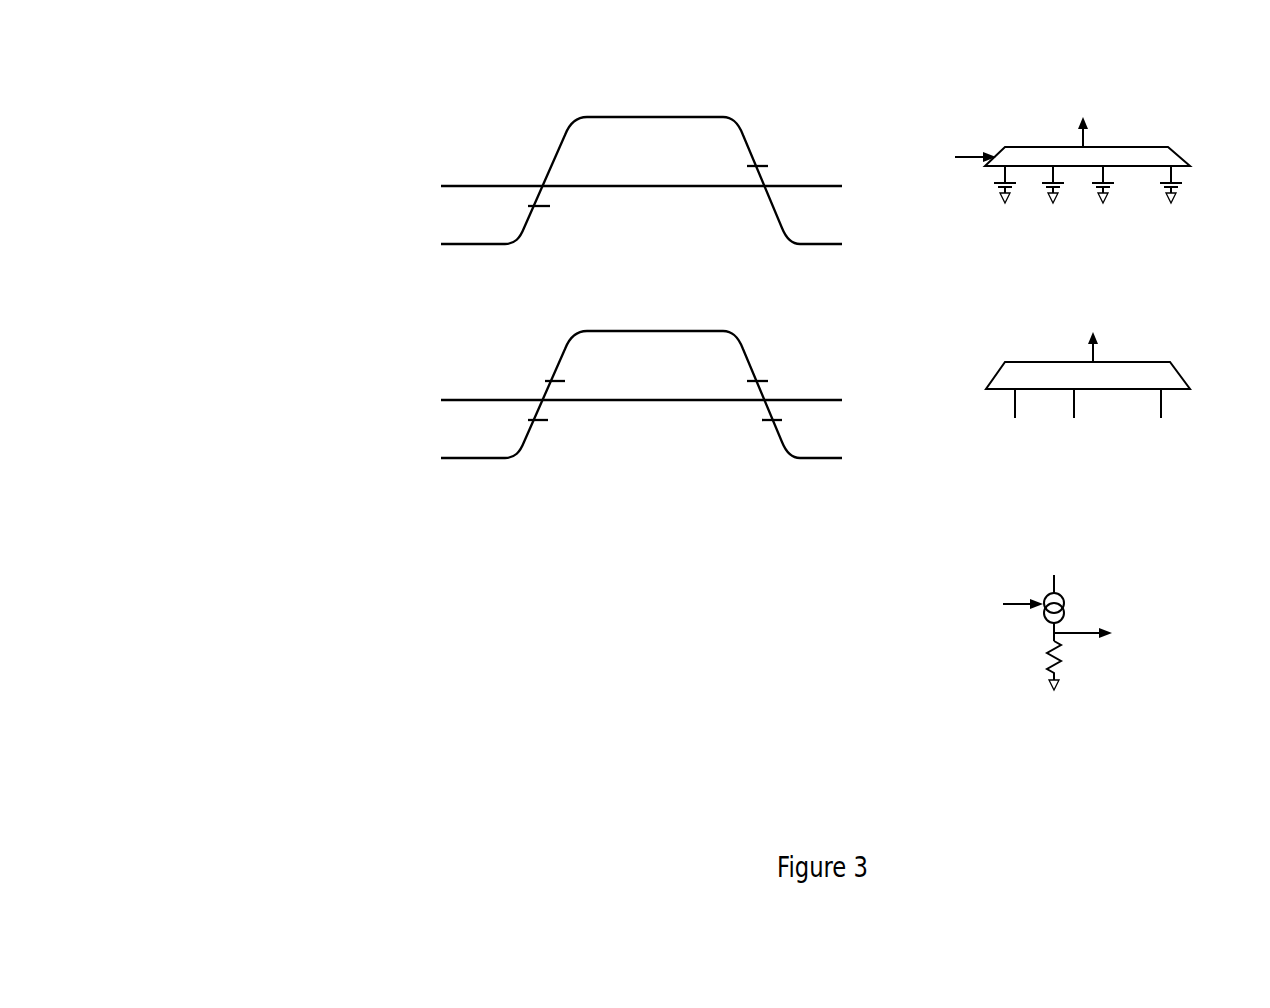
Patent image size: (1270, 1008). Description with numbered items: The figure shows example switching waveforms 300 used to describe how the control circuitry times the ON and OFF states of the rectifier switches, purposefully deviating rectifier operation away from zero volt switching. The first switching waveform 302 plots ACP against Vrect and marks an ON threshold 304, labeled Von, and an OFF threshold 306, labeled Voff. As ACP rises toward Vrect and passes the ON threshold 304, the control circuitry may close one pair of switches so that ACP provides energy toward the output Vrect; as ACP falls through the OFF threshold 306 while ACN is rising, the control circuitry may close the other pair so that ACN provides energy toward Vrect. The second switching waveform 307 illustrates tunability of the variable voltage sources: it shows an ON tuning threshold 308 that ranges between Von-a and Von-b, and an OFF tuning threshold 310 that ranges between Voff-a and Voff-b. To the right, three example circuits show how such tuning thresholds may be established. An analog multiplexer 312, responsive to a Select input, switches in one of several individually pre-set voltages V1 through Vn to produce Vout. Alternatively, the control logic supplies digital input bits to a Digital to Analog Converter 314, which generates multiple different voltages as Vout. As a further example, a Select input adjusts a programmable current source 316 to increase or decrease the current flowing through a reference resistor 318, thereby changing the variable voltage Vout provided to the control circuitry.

The switching waveforms 300 is at (291, 78).
The switching waveform 302 is at (485, 124).
The ON threshold 304 is at (540, 208).
The OFF threshold 306 is at (756, 165).
The switching waveform 307 is at (485, 339).
The ON tuning threshold 308 is at (554, 428).
The OFF tuning threshold 310 is at (765, 365).
The analog multiplexer 312 is at (1157, 152).
The Digital to Analog Converter (DAC) 314 is at (1155, 372).
The programmable current source 316 is at (1060, 597).
The reference resistor 318 is at (1058, 682).